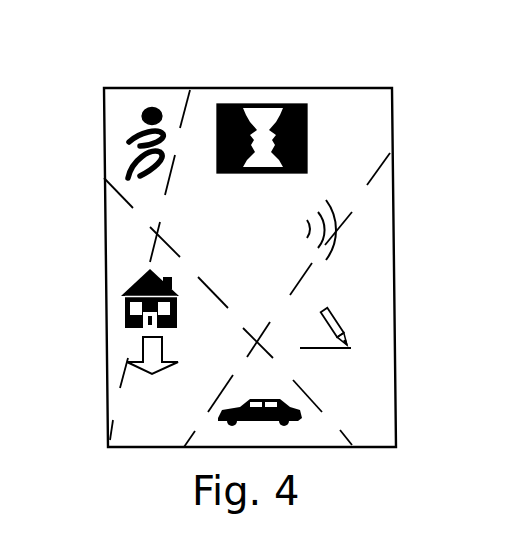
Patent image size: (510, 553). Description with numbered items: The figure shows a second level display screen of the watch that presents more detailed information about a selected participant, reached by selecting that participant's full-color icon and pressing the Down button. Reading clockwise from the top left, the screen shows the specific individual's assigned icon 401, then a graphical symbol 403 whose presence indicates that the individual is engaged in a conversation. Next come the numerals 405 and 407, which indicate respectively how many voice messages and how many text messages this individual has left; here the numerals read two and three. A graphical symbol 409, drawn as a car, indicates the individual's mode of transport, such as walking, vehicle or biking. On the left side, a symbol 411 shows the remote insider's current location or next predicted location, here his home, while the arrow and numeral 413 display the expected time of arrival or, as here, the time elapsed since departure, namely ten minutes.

The assigned icon 401 is at (123, 138).
The conversation symbol 403 is at (258, 108).
The voice message numeral 405 is at (370, 228).
The text message numeral 407 is at (368, 323).
The mode of transport symbol 409 is at (288, 423).
The location symbol 411 is at (150, 298).
The arrow and numeral 413 is at (130, 395).